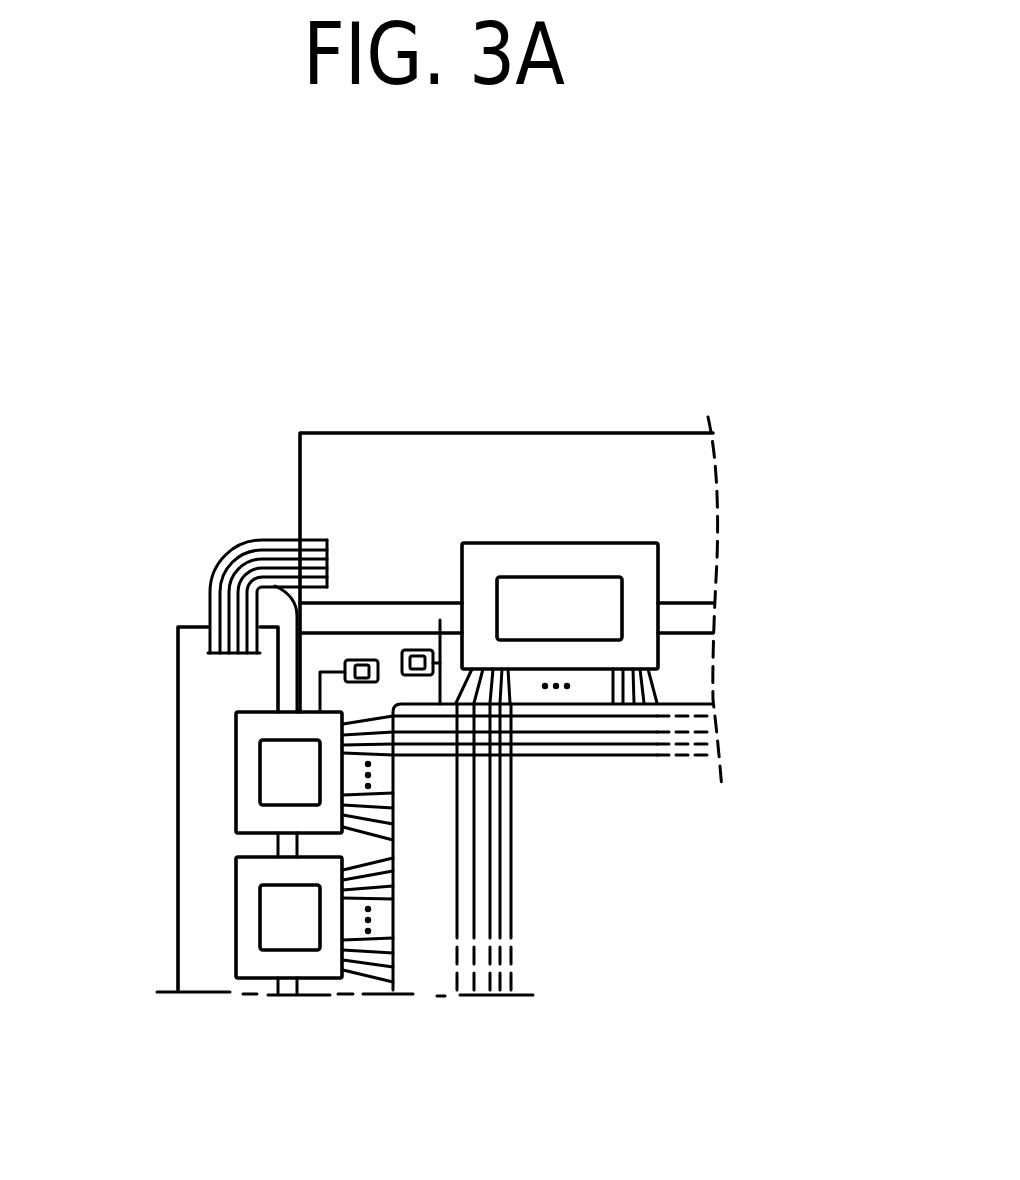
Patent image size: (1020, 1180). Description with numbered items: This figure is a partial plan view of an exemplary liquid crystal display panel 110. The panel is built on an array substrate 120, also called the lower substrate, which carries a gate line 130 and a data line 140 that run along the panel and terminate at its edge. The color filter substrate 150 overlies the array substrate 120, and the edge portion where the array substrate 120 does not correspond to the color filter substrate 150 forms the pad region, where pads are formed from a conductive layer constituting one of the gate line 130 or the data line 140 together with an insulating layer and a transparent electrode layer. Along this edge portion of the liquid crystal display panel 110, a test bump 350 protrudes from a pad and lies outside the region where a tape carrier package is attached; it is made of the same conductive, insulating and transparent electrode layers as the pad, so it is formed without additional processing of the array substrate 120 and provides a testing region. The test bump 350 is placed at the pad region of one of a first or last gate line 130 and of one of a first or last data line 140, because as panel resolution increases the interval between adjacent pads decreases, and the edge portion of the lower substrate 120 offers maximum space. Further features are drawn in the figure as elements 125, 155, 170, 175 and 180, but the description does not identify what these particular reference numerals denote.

The liquid crystal display panel 110 is at (493, 1003).
The array substrate 120 is at (267, 537).
The connection wiring 125 is at (307, 686).
The gate line 130 is at (674, 762).
The data line 140 is at (512, 957).
The color filter substrate 150 is at (440, 620).
The boundary line 155 is at (423, 968).
The frame region 170 is at (565, 433).
The flexible cable bundle 175 is at (222, 561).
The driver IC 180 is at (633, 543).
The test bump 350 is at (360, 660).